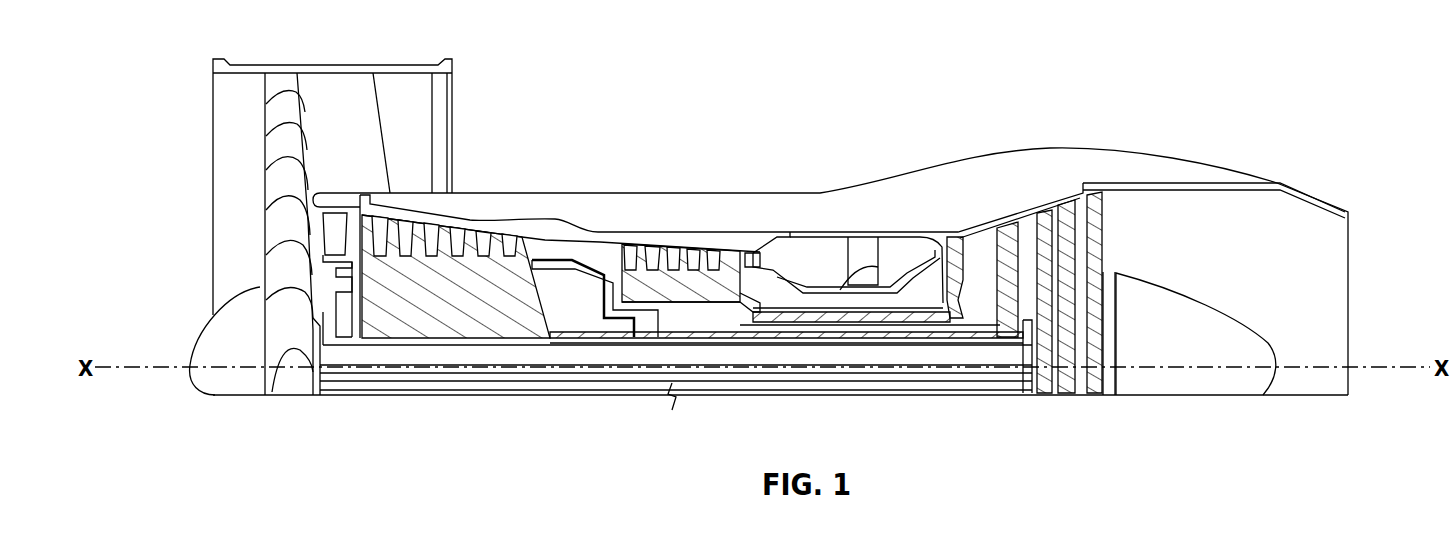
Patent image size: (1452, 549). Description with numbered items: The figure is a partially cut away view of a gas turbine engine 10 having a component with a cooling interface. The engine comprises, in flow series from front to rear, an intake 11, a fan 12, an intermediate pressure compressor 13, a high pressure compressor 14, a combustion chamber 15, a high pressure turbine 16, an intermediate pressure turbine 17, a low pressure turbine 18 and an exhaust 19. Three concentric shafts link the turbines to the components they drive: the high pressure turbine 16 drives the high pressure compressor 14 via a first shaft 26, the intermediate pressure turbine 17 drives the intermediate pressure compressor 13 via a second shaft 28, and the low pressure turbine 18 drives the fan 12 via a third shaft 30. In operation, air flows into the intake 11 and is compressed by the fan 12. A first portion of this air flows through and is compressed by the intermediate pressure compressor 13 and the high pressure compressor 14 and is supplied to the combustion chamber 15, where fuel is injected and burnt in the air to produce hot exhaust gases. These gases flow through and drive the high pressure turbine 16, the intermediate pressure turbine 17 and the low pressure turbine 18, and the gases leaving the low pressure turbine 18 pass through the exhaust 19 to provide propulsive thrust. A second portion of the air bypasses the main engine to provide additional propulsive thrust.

The gas turbine engine 10 is at (645, 123).
The intake 11 is at (188, 207).
The fan 12 is at (290, 105).
The intermediate pressure compressor 13 is at (452, 277).
The high pressure compressor 14 is at (680, 242).
The combustion chamber 15 is at (868, 230).
The high pressure turbine 16 is at (955, 240).
The intermediate pressure turbine 17 is at (1011, 225).
The low pressure turbine 18 is at (1077, 232).
The exhaust 19 is at (1340, 306).
The first shaft 26 is at (932, 320).
The second shaft 28 is at (617, 340).
The third shaft 30 is at (489, 392).